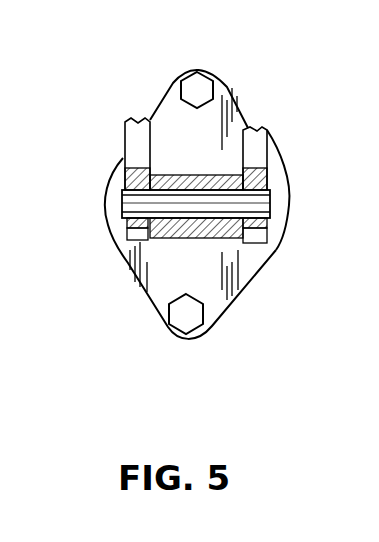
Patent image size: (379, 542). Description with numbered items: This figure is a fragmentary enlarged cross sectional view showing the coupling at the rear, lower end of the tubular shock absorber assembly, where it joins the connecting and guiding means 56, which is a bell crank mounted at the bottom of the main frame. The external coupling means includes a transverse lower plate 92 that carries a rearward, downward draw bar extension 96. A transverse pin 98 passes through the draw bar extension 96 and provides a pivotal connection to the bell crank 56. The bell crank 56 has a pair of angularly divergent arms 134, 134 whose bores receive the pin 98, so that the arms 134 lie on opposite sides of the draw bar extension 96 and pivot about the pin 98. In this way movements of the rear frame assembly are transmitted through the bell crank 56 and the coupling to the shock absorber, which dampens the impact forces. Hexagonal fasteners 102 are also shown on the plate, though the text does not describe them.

The connecting and guiding means 56 is at (276, 250).
The transverse lower plate 92 is at (207, 157).
The draw bar extension 96 is at (208, 238).
The transverse pin 98 is at (265, 206).
The hex bolt 102 is at (198, 92).
The arms 134 is at (140, 150).